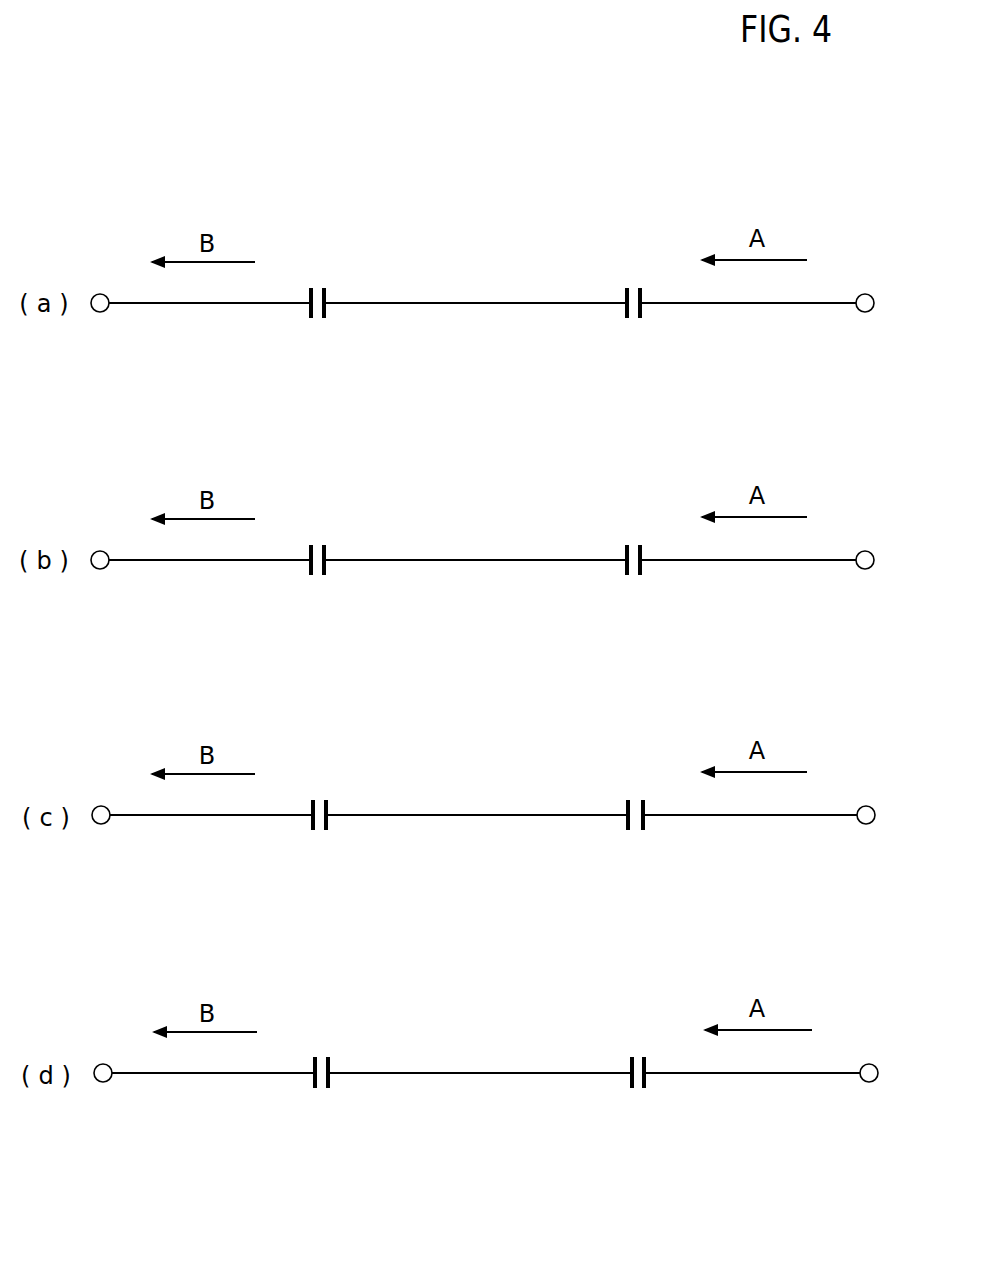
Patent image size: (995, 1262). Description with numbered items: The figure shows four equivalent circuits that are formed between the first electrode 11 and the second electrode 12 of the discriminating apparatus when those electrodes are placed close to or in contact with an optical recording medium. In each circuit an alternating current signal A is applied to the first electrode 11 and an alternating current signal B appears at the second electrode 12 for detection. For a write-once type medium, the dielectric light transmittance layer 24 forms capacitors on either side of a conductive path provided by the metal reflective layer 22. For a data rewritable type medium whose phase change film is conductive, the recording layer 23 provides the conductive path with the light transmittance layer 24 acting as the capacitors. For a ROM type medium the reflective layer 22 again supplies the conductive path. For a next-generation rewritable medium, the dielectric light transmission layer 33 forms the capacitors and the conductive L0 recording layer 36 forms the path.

The first electrode 11 is at (865, 293).
The second electrode 12 is at (100, 293).
The reflective layer 22 is at (438, 300).
The recording layer 23 is at (438, 557).
The light transmittance layer 24 is at (317, 577).
The light transmission layer 33 is at (321, 1090).
The L0 recording layer 36 is at (442, 1070).